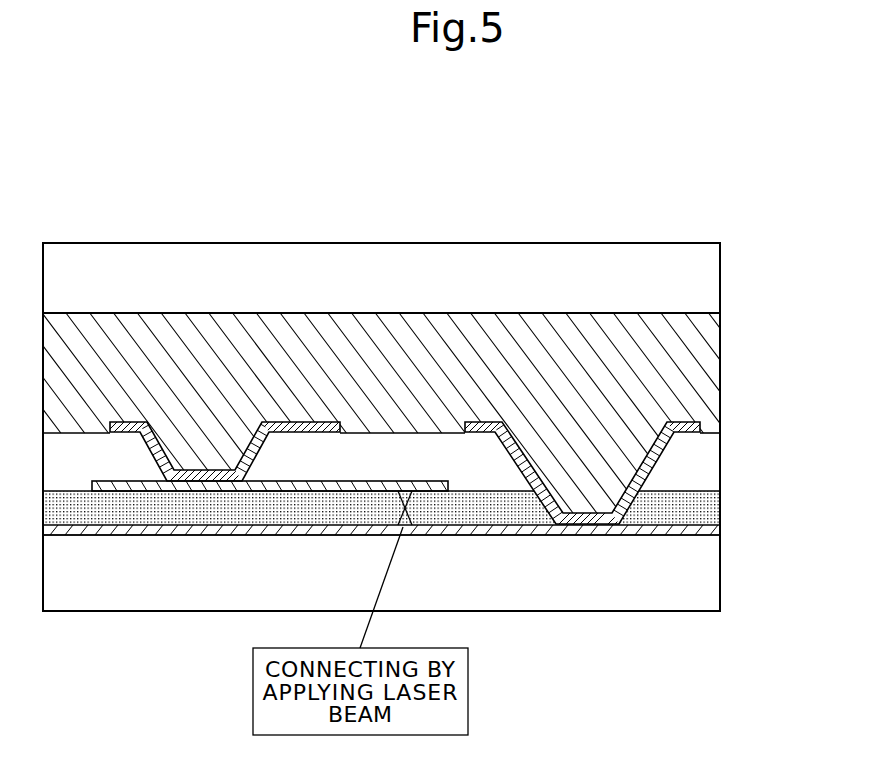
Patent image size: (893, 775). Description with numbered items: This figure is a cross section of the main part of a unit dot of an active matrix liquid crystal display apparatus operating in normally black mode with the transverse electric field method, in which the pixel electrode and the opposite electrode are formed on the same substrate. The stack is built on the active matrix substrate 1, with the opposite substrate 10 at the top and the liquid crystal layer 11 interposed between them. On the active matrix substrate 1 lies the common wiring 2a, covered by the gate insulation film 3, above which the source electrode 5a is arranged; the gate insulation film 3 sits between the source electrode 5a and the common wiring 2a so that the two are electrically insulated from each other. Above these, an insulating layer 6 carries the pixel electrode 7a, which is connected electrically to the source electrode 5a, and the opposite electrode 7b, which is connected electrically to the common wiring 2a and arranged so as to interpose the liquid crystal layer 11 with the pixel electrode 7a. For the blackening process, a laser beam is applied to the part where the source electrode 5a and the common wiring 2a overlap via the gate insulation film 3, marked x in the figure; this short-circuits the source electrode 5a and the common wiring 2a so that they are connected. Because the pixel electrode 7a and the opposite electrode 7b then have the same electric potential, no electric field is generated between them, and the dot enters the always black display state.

The active matrix substrate 1 is at (602, 582).
The common wiring 2a is at (700, 532).
The gate insulation film 3 is at (698, 512).
The source electrode 5a is at (378, 483).
The interlayer insulating film 6 is at (698, 463).
The pixel electrode 7a is at (128, 420).
The opposite electrode 7b is at (703, 425).
The opposite substrate 10 is at (630, 270).
The liquid crystal layer 11 is at (698, 362).